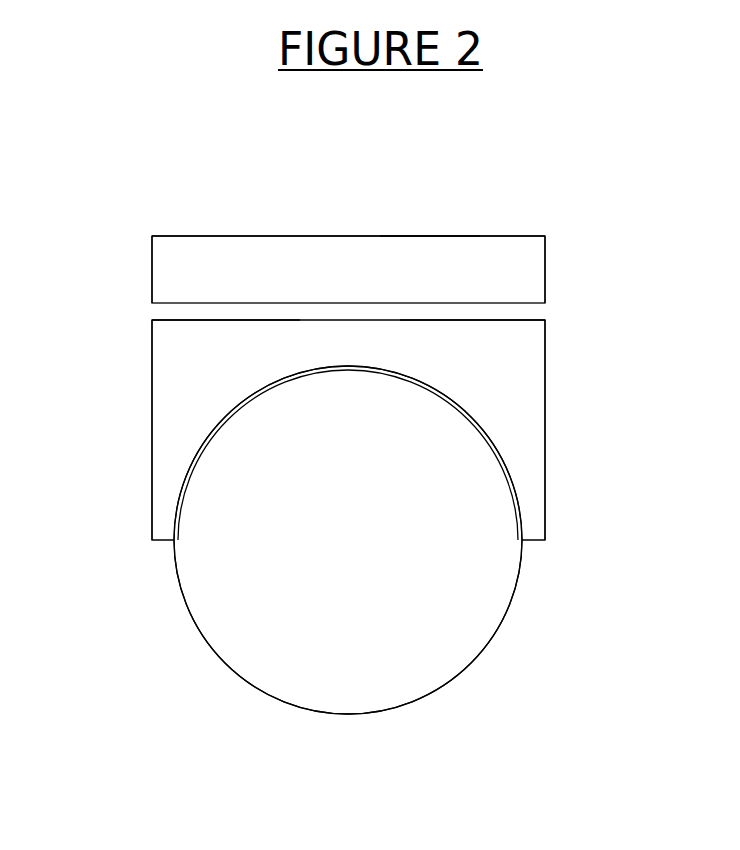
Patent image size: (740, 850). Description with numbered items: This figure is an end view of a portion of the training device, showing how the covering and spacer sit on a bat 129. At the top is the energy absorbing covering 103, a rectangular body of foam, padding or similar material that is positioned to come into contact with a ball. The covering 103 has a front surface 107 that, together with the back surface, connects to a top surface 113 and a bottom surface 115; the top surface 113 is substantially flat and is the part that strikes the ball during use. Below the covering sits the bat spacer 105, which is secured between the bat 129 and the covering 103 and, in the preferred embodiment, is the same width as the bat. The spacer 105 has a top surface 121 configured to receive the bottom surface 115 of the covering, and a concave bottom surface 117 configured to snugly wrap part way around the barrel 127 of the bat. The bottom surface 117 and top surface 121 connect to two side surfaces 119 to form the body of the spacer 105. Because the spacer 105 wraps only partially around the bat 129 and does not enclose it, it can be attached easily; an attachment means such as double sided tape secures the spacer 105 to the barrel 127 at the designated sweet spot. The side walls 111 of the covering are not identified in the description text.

The energy absorbing covering 103 is at (348, 269).
The bat spacer 105 is at (348, 430).
The front surface 107 is at (434, 224).
The side walls of first housing portion 111 is at (137, 271).
The top surface 113 is at (292, 222).
The bottom surface 115 is at (214, 323).
The concave bottom surface 117 is at (284, 393).
The side surfaces 119 is at (136, 455).
The top surface 121 is at (465, 304).
The barrel 127 is at (515, 629).
The bat 129 is at (348, 540).